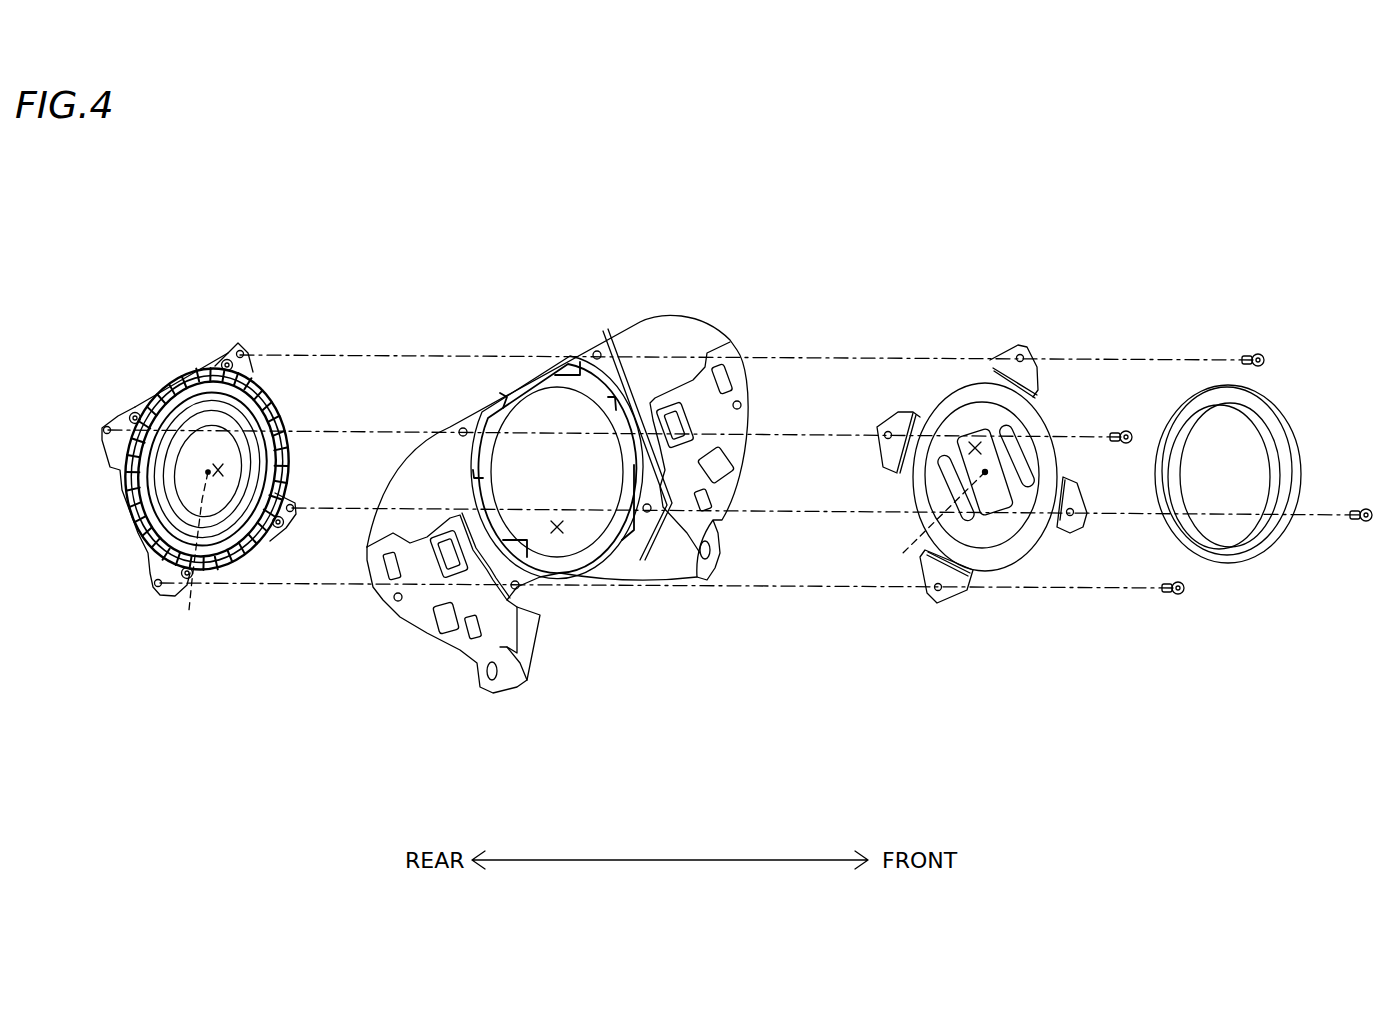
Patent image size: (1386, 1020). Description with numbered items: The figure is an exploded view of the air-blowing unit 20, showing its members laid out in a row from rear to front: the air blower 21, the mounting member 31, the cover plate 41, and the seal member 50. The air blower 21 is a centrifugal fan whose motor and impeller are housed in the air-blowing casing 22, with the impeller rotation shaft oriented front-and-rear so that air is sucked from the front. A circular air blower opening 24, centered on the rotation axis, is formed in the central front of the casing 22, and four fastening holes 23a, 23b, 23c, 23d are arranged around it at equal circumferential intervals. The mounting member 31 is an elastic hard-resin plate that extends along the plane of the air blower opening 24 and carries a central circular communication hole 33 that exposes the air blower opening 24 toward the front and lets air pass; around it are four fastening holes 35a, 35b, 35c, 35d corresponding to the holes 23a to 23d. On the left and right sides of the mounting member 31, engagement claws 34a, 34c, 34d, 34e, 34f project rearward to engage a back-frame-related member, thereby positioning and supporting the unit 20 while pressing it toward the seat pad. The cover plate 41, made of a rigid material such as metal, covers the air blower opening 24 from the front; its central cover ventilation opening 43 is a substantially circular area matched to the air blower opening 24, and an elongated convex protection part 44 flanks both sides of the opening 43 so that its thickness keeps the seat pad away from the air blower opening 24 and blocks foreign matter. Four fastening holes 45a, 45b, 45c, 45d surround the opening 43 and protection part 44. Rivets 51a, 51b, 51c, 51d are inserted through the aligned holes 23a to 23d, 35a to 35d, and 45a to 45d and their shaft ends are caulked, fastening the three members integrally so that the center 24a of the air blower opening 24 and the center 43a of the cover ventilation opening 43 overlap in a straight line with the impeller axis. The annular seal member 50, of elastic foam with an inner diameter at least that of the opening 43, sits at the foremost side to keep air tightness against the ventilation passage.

The air-blowing unit 20 is at (752, 222).
The air blower 21 is at (152, 365).
The air-blowing casing 22 is at (253, 547).
The fastening hole 23a is at (240, 348).
The fastening hole 23b is at (294, 512).
The fastening hole 23c is at (155, 590).
The fastening hole 23d is at (104, 426).
The air blower opening 24 is at (222, 466).
The center of the air blower opening 24a is at (212, 558).
The mounting member 31 is at (647, 337).
The communication hole 33 is at (558, 533).
The engagement claw 34a is at (730, 370).
The engagement claw 34c is at (735, 462).
The engagement claw 34d is at (680, 425).
The engagement claw 34e is at (425, 558).
The engagement claw 34f is at (443, 632).
The fastening hole 35a is at (596, 350).
The fastening hole 35b is at (645, 513).
The fastening hole 35c is at (518, 590).
The fastening hole 35d is at (458, 428).
The cover plate 41 is at (986, 400).
The cover ventilation opening 43 is at (972, 442).
The center of the cover ventilation opening 43a is at (925, 527).
The protection part 44 is at (1020, 456).
The fastening hole 45a is at (1020, 350).
The fastening hole 45b is at (1074, 517).
The fastening hole 45c is at (937, 593).
The fastening hole 45d is at (888, 428).
The seal member 50 is at (1282, 415).
The rivet 51a is at (1260, 355).
The rivet 51b is at (1366, 523).
The rivet 51c is at (1178, 597).
The rivet 51d is at (1127, 431).